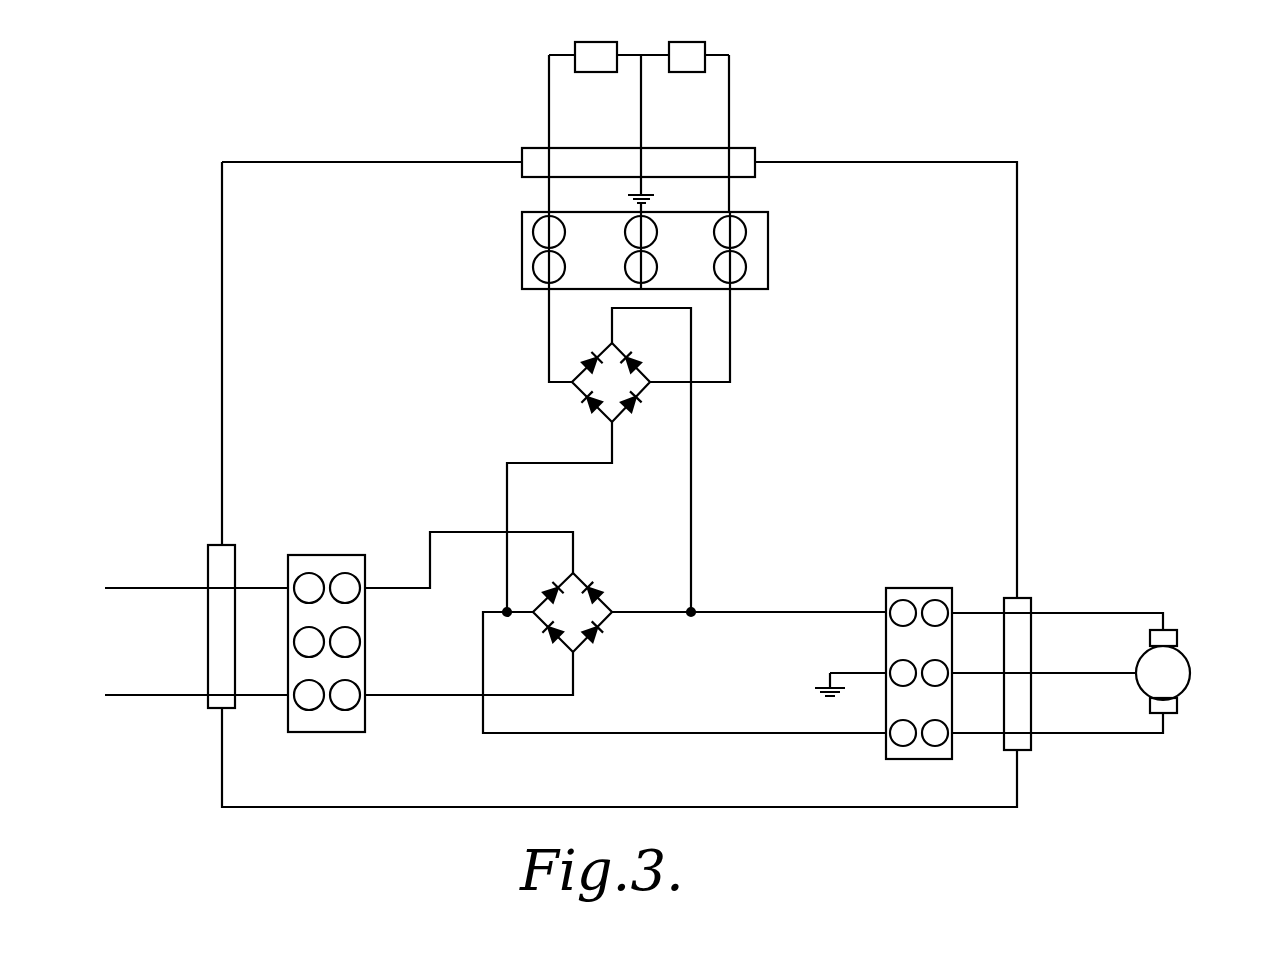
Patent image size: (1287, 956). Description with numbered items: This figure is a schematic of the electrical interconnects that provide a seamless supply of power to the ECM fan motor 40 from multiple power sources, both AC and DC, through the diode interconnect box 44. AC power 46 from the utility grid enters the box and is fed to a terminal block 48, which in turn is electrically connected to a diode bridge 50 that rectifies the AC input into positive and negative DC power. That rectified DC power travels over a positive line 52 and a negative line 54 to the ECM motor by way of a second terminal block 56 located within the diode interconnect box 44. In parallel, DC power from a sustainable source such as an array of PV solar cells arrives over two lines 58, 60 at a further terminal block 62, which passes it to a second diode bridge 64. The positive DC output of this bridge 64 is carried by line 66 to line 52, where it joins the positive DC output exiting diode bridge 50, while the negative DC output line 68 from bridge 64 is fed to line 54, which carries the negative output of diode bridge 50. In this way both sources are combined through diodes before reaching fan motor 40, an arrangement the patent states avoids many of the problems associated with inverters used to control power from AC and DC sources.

The fan motor 40 is at (1163, 675).
The diode interconnect box 44 is at (955, 156).
The AC power 46 is at (160, 588).
The terminal block 48 is at (345, 580).
The diode bridge 50 is at (603, 623).
The line 52 is at (785, 612).
The line 54 is at (745, 735).
The terminal block 56 is at (921, 592).
The line 58 is at (549, 100).
The line 60 is at (729, 118).
The terminal block 62 is at (522, 225).
The second diode bridge 64 is at (620, 418).
The line 66 is at (691, 524).
The negative DC output line 68 is at (540, 460).